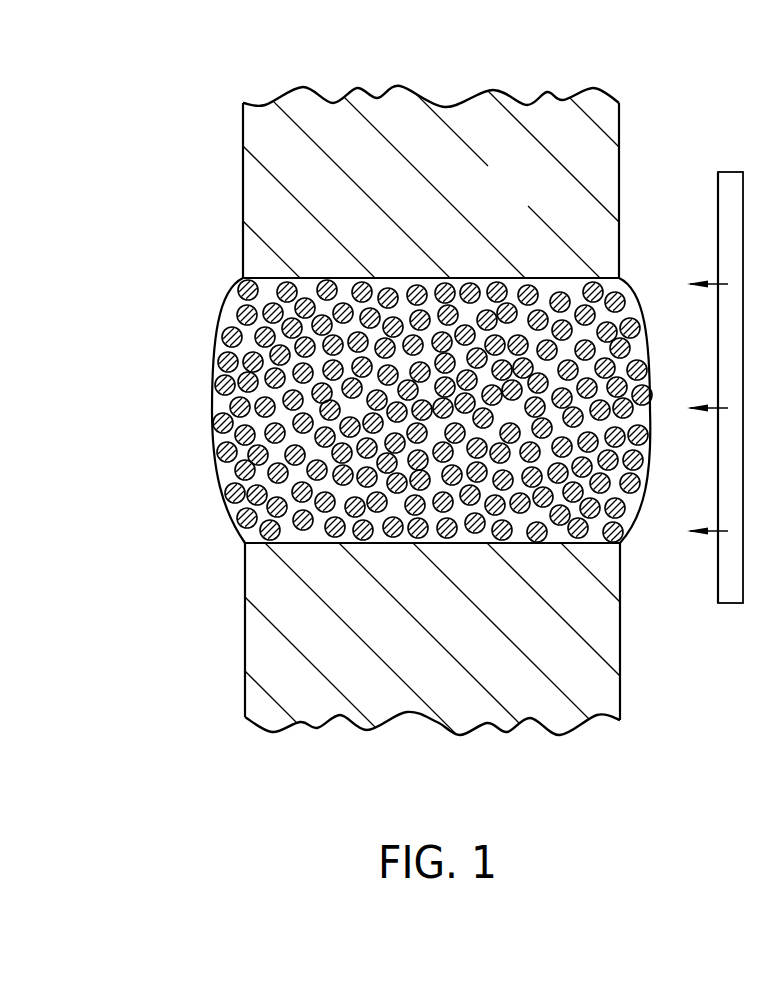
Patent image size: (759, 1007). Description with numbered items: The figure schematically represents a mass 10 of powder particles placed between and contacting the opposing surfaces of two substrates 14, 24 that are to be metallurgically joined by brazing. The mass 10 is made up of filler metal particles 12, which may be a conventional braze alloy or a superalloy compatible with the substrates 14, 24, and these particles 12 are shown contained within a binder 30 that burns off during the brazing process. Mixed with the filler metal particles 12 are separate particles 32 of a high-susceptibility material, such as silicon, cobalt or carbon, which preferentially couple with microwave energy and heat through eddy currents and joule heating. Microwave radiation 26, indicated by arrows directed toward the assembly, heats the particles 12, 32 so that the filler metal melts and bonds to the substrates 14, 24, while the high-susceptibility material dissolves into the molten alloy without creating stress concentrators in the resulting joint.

The mass 10 is at (385, 390).
The filler metal particles 12 is at (213, 390).
The substrate 14 is at (268, 643).
The substrate 24 is at (257, 185).
The microwave radiation 26 is at (732, 595).
The binder 30 is at (428, 288).
The particles 32 is at (220, 505).